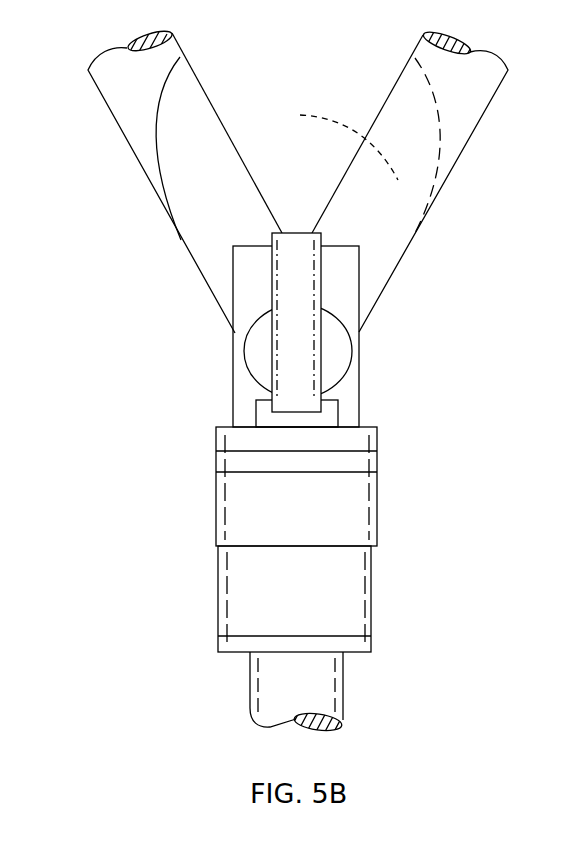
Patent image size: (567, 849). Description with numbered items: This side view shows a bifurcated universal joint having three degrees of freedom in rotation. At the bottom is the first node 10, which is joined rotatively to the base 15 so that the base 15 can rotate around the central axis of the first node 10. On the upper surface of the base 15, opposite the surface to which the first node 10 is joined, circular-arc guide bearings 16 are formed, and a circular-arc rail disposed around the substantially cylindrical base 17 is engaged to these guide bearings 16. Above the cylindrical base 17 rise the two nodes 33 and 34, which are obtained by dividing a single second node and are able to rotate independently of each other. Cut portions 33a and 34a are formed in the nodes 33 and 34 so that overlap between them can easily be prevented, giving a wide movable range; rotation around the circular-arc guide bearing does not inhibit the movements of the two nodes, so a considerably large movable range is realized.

The first node 10 is at (262, 685).
The base 15 is at (237, 528).
The circular-arc guide bearings 16 is at (282, 348).
The cylindrical base 17 is at (347, 290).
The node 33 is at (115, 107).
The cut portion 33a is at (197, 215).
The node 34 is at (400, 227).
The cut portion 34a is at (323, 144).